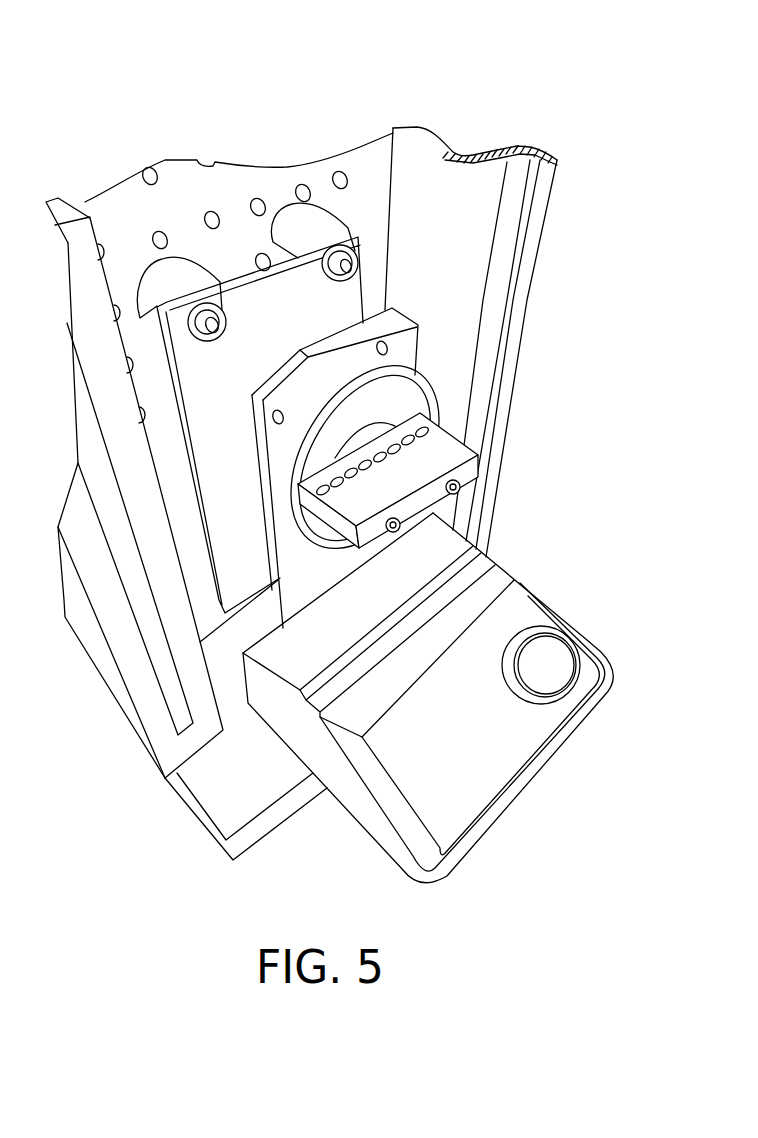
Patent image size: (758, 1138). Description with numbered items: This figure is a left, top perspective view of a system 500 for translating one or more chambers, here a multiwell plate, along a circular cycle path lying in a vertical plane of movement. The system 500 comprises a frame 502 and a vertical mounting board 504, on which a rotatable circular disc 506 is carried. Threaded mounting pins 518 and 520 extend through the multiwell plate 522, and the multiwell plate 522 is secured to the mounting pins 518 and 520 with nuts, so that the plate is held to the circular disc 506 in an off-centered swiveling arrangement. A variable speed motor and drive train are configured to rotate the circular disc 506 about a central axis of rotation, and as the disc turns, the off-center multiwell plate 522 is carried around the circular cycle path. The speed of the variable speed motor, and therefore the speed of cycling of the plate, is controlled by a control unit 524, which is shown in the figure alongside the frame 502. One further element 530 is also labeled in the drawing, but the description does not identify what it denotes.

The mounting assembly 500 is at (243, 126).
The frame member 502 is at (515, 184).
The perforated panel 504 is at (143, 207).
The mounting plate 506 is at (433, 385).
The fastener 518 is at (462, 490).
The fastener 520 is at (433, 547).
The connector block 522 is at (440, 436).
The housing 524 is at (520, 612).
The standoff bolts 530 is at (310, 218).